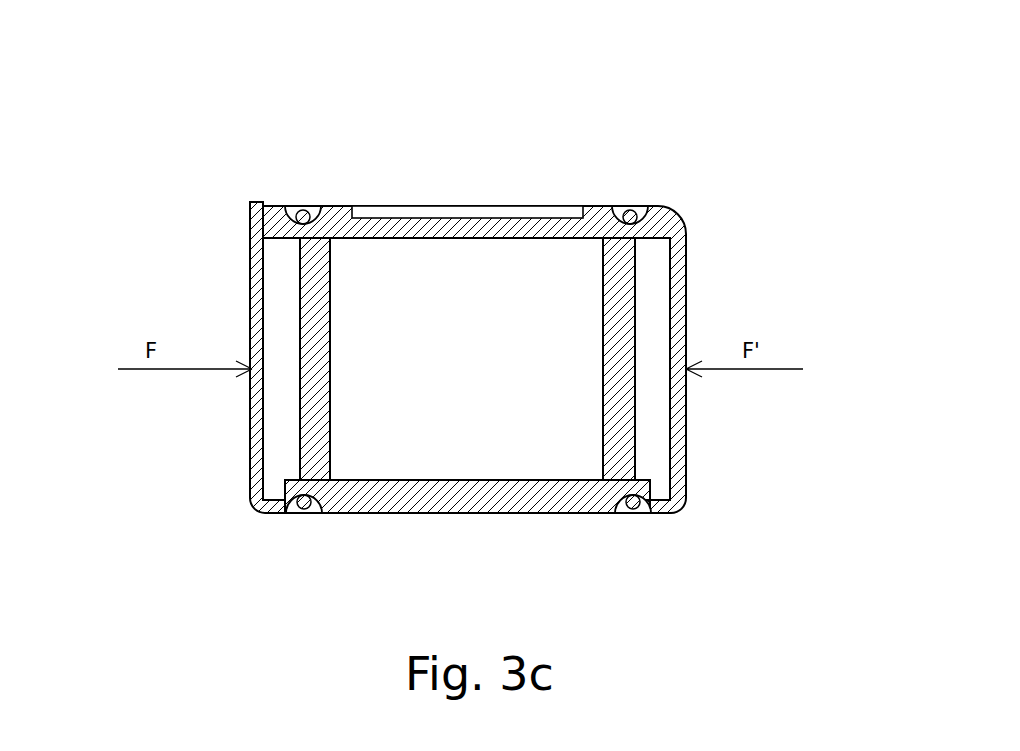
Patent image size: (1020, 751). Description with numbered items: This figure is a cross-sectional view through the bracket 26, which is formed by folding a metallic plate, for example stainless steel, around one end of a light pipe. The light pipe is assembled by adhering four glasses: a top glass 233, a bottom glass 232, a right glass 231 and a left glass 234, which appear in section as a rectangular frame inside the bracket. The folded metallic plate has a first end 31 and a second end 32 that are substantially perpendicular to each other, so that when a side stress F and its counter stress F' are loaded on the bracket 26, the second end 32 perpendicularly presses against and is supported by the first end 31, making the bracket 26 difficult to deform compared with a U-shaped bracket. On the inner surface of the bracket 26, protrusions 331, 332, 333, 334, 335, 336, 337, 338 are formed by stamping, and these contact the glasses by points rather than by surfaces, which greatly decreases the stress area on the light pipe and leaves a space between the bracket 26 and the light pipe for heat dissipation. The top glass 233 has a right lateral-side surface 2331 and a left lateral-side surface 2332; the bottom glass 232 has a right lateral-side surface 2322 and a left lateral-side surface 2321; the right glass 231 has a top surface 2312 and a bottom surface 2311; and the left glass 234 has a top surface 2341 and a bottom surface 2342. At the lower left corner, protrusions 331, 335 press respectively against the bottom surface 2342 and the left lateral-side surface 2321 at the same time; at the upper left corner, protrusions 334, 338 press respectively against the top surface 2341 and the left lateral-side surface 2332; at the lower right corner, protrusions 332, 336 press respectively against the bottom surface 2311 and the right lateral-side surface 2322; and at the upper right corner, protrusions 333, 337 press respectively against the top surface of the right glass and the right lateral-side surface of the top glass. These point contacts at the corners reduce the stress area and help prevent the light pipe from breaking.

The bracket 26 is at (722, 119).
The first end 31 is at (255, 208).
The second end 32 is at (294, 207).
The right glass 231 is at (617, 330).
The bottom surface 2311 is at (637, 478).
The top surface 2312 is at (637, 240).
The bottom glass 232 is at (482, 508).
The left lateral-side surface 2321 is at (313, 500).
The right lateral-side surface 2322 is at (618, 503).
The top glass 233 is at (500, 212).
The right lateral-side surface 2331 is at (623, 206).
The left lateral-side surface 2332 is at (355, 208).
The left glass 234 is at (317, 333).
The top surface 2341 is at (300, 240).
The bottom surface 2342 is at (300, 481).
The protrusion 331 is at (219, 538).
The protrusion 332 is at (739, 515).
The protrusion 333 is at (724, 200).
The protrusion 334 is at (186, 218).
The protrusion 335 is at (297, 497).
The protrusion 336 is at (647, 512).
The protrusion 337 is at (667, 212).
The protrusion 338 is at (296, 221).